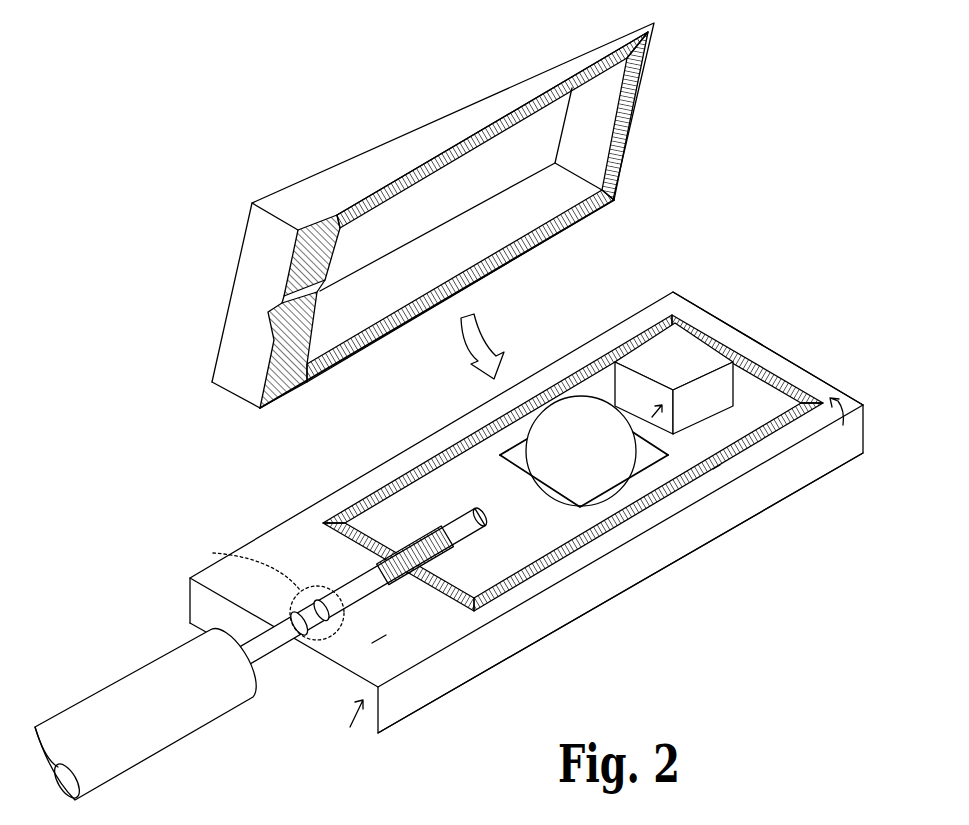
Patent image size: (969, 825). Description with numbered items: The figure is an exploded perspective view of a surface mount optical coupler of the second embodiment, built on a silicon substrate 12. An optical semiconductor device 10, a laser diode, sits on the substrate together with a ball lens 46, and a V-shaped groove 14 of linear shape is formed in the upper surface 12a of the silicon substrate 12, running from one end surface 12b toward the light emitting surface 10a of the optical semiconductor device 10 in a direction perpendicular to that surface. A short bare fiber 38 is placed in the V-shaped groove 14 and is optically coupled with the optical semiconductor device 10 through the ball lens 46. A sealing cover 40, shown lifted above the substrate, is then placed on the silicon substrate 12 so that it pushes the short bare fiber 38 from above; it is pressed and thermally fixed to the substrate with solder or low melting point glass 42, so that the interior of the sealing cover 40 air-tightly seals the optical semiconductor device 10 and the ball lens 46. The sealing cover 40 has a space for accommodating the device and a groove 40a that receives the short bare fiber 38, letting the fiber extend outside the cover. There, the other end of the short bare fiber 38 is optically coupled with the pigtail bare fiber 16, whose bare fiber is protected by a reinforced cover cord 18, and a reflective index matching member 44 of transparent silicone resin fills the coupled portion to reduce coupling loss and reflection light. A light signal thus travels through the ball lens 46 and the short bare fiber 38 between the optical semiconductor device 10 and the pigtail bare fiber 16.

The optical semiconductor device 10 is at (687, 357).
The light emitting surface 10a is at (713, 469).
The silicon substrate 12 is at (785, 480).
The upper surface 12a is at (843, 425).
The end surface 12b is at (350, 727).
The V-shaped groove 14 is at (372, 643).
The pigtail bare fiber 16 is at (277, 642).
The cover cord 18 is at (138, 703).
The short bare fiber 38 is at (357, 587).
The sealing cover 40 is at (303, 197).
The groove 40a is at (270, 360).
The solder or low melting point glass 42 is at (643, 75).
The reflective index matching member 44 is at (215, 553).
The ball lens 46 is at (598, 433).